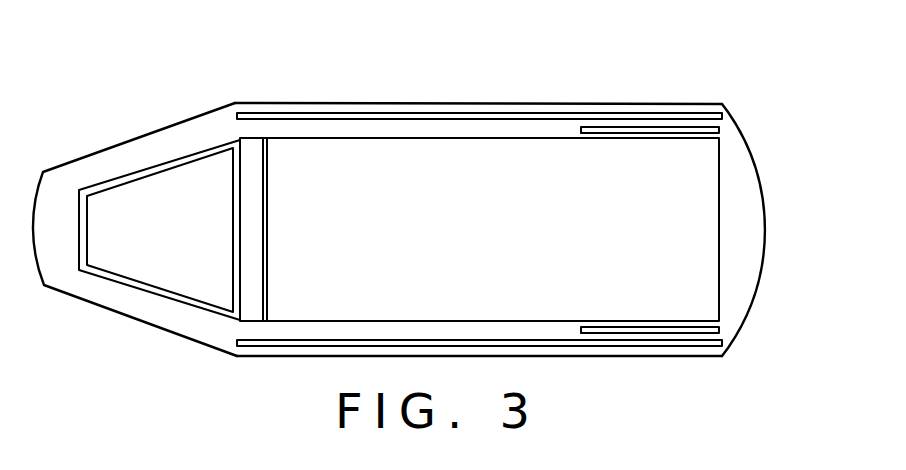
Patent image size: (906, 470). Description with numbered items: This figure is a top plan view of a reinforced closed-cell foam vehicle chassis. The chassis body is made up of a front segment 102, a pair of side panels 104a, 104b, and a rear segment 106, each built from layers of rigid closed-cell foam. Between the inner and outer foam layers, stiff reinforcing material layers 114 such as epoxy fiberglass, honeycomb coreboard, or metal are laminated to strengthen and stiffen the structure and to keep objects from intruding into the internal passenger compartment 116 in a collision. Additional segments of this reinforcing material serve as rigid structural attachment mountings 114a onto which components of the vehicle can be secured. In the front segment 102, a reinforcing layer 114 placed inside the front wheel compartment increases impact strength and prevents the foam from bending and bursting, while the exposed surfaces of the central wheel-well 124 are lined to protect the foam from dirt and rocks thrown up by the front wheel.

The front segment 102 is at (168, 315).
The side panel 104a is at (292, 357).
The side panel 104b is at (362, 103).
The rear segment 106 is at (735, 193).
The reinforcing material layer 114 is at (443, 115).
The structural attachment mounting 114a is at (602, 127).
The internal passenger compartment 116 is at (535, 234).
The central wheel-well 124 is at (213, 208).